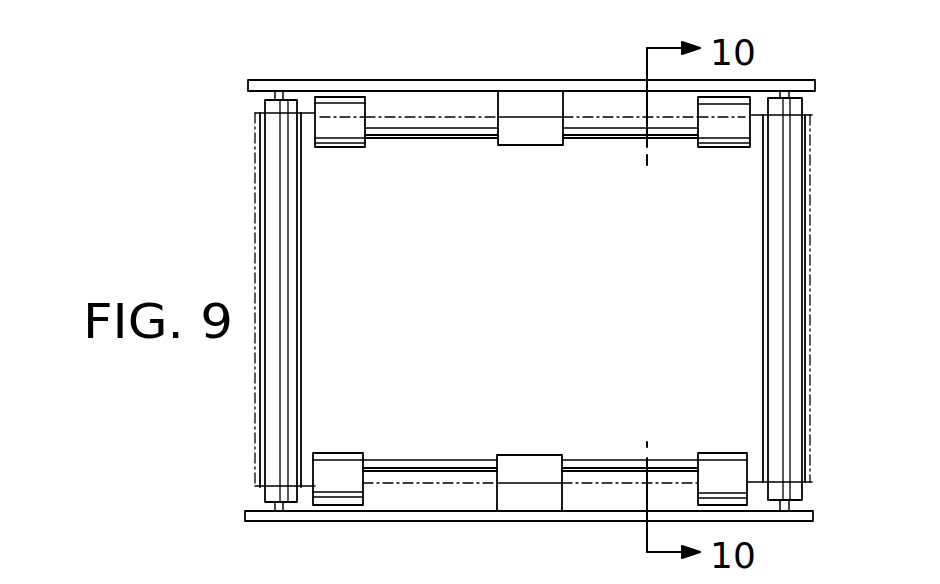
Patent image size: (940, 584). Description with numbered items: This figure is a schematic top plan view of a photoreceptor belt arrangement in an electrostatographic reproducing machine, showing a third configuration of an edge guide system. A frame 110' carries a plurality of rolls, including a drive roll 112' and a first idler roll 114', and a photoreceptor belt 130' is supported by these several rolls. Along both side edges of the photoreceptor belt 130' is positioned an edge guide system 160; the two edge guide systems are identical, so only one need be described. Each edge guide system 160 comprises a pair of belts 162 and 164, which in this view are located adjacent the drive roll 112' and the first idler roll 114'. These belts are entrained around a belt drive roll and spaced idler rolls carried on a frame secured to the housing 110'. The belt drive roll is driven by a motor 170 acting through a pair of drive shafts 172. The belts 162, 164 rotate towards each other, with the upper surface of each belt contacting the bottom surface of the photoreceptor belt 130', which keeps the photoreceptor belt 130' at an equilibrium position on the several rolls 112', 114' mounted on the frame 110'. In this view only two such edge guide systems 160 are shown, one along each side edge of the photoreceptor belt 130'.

The frame 110' is at (531, 69).
The photoreceptor belt 130' is at (529, 531).
The first idler roll 114' is at (241, 301).
The drive roll 112' is at (828, 299).
The edge guide system 160 is at (531, 301).
The belt 164 is at (331, 140).
The motor 170 is at (529, 135).
The drive shafts 172 is at (620, 140).
The belt 162 is at (716, 140).